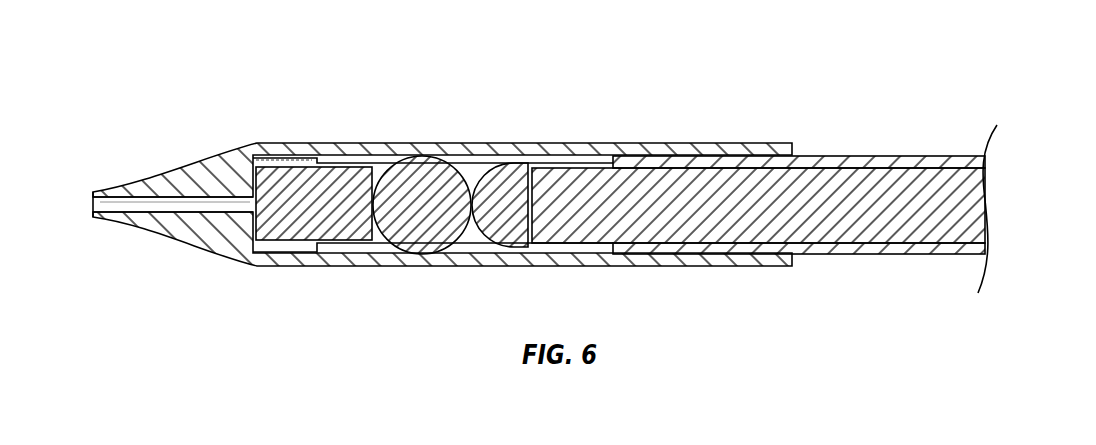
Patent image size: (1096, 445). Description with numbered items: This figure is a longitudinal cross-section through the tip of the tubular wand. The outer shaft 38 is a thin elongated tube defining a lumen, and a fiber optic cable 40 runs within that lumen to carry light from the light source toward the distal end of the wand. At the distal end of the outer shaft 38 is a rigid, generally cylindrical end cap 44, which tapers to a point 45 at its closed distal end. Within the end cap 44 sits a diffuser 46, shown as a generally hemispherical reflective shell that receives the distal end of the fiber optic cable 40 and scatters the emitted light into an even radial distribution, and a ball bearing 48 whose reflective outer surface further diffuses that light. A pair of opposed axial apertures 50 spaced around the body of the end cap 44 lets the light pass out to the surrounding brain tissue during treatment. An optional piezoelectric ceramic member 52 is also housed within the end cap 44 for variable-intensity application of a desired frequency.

The outer shaft 38 is at (863, 160).
The fiber optic cable 40 is at (923, 227).
The end cap 44 is at (368, 266).
The point 45 is at (93, 193).
The diffuser 46 is at (500, 183).
The ball bearing 48 is at (452, 232).
The apertures 50 is at (473, 173).
The piezoelectric ceramic member 52 is at (342, 180).